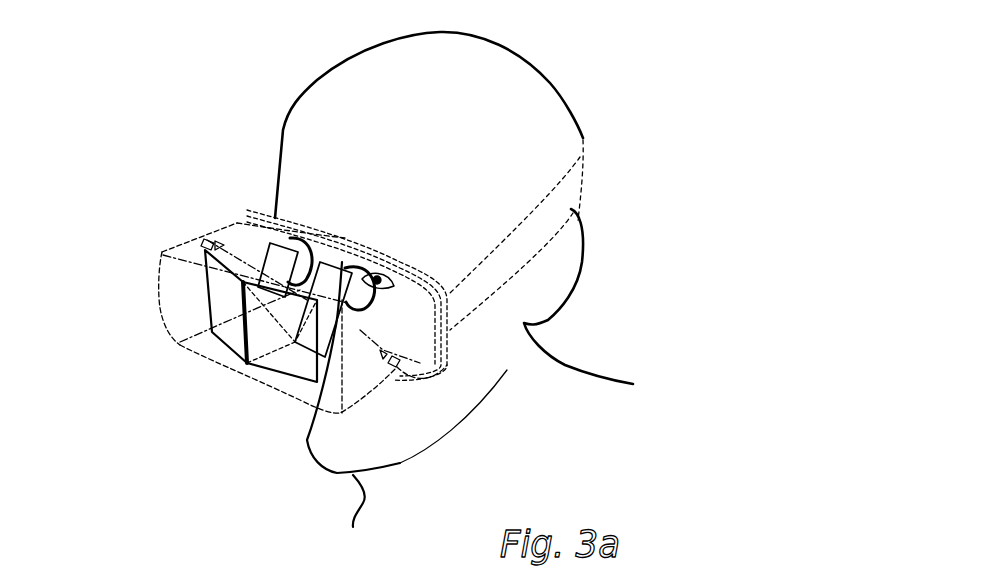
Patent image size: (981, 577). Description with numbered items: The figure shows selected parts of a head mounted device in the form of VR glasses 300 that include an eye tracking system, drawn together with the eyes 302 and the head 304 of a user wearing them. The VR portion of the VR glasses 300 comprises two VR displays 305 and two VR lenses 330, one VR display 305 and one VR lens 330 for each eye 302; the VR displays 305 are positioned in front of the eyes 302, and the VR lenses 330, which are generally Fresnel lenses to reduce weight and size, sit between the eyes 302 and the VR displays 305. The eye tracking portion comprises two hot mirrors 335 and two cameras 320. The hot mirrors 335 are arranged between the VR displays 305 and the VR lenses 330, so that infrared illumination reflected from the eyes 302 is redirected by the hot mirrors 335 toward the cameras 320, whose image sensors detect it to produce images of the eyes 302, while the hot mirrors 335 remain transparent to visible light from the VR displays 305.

The VR glasses 300 is at (160, 257).
The eyes 302 is at (307, 237).
The head 304 is at (560, 92).
The VR displays 305 is at (223, 340).
The cameras 320 is at (208, 240).
The VR lenses 330 is at (310, 247).
The hot mirrors 335 is at (262, 258).